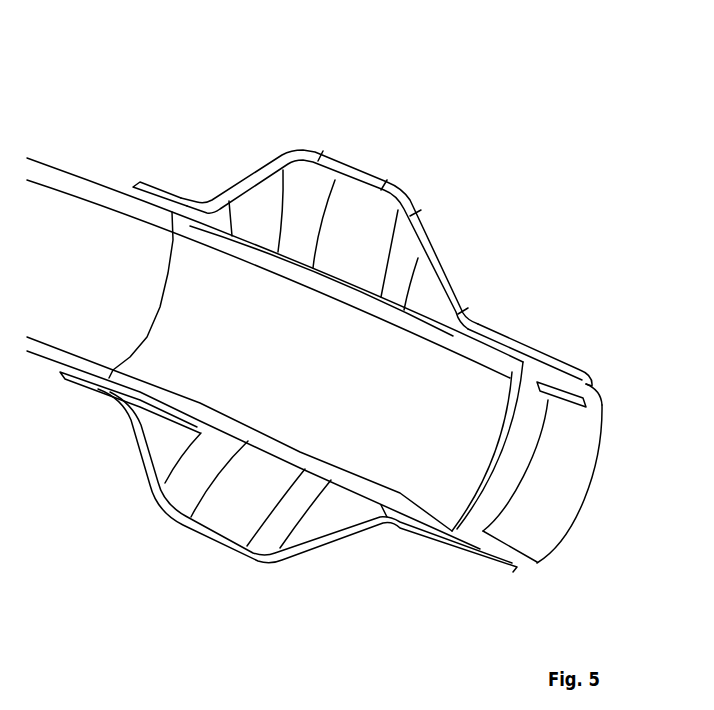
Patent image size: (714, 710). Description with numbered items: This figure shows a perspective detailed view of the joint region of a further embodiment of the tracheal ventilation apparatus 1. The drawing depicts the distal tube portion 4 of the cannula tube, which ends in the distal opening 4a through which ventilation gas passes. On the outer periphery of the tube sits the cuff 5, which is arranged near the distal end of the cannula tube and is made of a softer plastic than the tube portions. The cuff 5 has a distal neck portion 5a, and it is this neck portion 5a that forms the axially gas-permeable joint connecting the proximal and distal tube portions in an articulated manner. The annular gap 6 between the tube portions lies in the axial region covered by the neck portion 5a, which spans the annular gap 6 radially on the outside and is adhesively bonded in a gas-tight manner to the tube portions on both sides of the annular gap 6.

The tracheal ventilation apparatus 1 is at (190, 168).
The distal tube portion 4 is at (546, 531).
The distal opening 4a is at (590, 497).
The cuff 5 is at (367, 187).
The neck portion 5a is at (513, 338).
The annular gap 6 is at (538, 377).